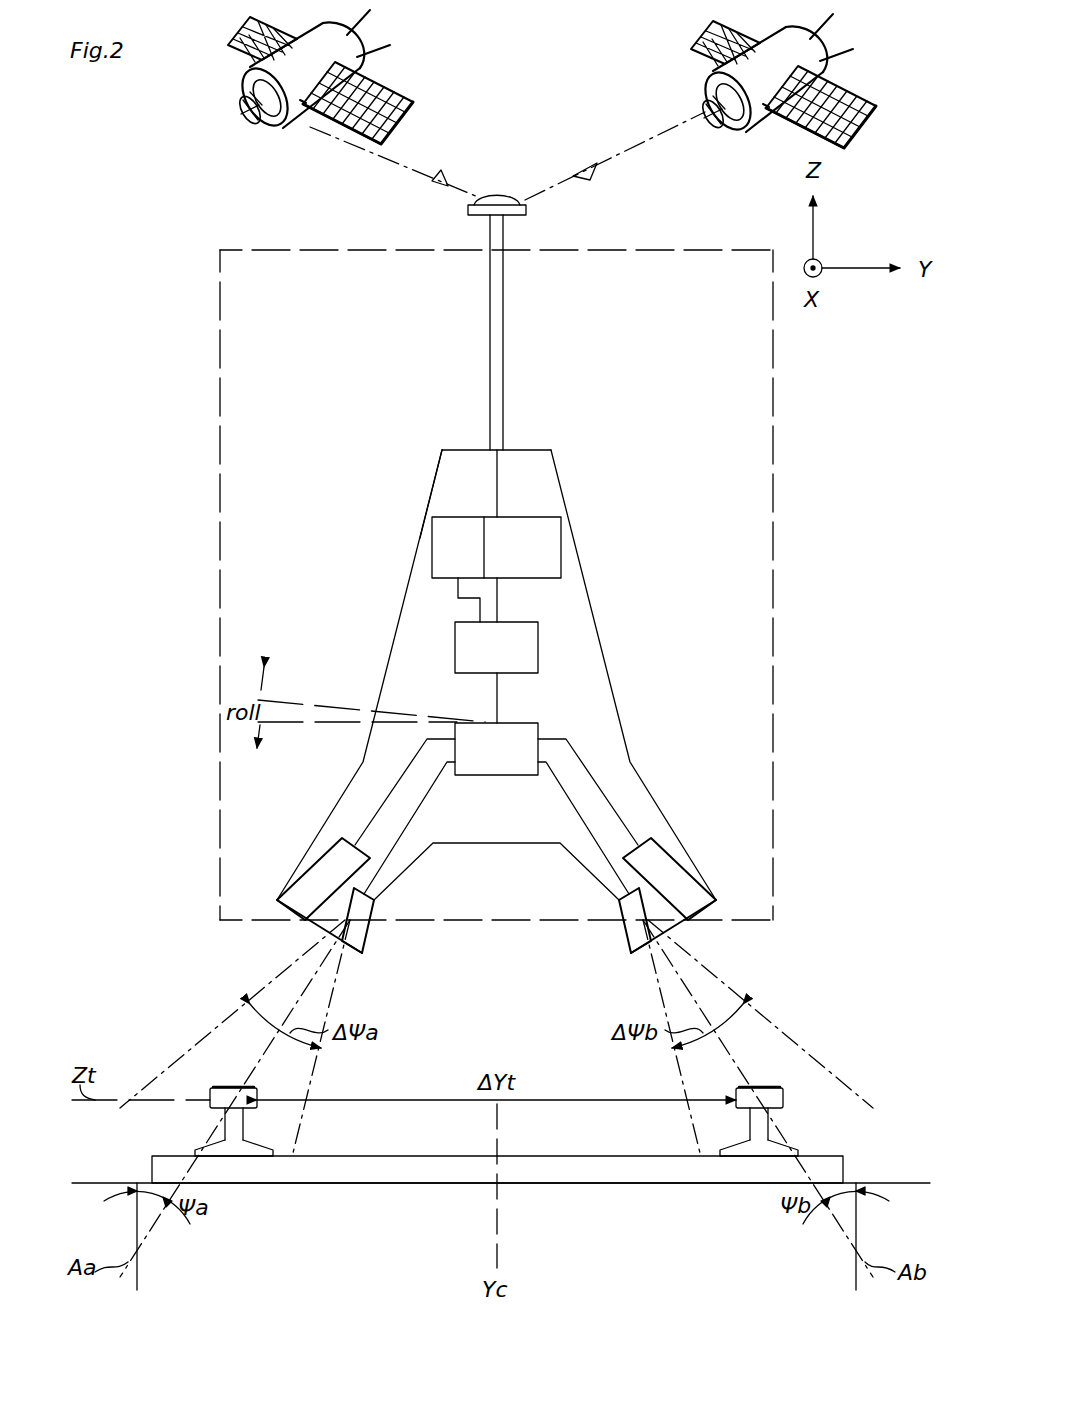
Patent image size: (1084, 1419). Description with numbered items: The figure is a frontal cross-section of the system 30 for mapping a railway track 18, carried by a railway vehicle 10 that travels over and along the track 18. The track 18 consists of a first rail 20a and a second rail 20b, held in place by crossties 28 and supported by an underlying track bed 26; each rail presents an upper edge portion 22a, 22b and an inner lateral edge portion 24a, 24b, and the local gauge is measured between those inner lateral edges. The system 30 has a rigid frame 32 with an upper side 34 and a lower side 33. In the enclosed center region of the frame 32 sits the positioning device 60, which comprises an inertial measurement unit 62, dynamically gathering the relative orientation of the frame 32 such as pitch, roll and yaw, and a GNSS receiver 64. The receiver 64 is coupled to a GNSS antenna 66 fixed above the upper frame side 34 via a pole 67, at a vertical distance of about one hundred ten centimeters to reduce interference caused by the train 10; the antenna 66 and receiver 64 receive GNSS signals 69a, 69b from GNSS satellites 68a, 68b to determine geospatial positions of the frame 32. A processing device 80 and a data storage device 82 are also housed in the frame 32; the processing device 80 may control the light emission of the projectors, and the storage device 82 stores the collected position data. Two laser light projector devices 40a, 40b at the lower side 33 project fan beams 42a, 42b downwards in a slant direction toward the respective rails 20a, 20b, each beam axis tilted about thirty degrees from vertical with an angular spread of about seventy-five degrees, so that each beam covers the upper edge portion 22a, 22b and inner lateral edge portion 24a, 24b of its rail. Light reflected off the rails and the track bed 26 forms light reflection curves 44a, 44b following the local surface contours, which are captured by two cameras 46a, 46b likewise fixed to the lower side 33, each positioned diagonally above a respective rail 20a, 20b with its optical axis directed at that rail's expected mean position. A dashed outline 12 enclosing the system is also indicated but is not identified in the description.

The railway vehicle 10 is at (798, 571).
The measuring vehicle frame 12 is at (740, 655).
The railway track 18 is at (504, 1132).
The first rail 20a is at (213, 1143).
The second rail 20b is at (780, 1143).
The upper edge portion of first rail 22a is at (232, 1088).
The upper edge portion of second rail 22b is at (762, 1088).
The inner lateral edge portion of first rail 24a is at (255, 1137).
The inner lateral edge portion of second rail 24b is at (738, 1132).
The track bed 26 is at (501, 1199).
The crossties 28 is at (573, 1170).
The system for mapping a railway track 30 is at (662, 795).
The rigid frame 32 is at (410, 648).
The lower side of the frame 33 is at (488, 850).
The upper side of the frame 34 is at (528, 465).
The first light projector device 40a is at (357, 912).
The second light projector device 40b is at (636, 912).
The first fan beam 42a is at (240, 1032).
The second fan beam 42b is at (753, 1027).
The first light reflection curve 44a is at (240, 1136).
The second light reflection curve 44b is at (753, 1136).
The first image acquisition device 46a is at (332, 870).
The second image acquisition device 46b is at (661, 870).
The positioning device 60 is at (485, 511).
The inertial measurement unit 62 is at (440, 568).
The GNSS receiver 64 is at (553, 565).
The GNSS antenna 66 is at (498, 200).
The pole 67 is at (490, 330).
The first GNSS satellite 68a is at (252, 77).
The second GNSS satellite 68b is at (740, 132).
The first GNSS signal 69a is at (420, 177).
The second GNSS signal 69b is at (613, 160).
The processing device 80 is at (535, 640).
The data storage device 82 is at (535, 728).